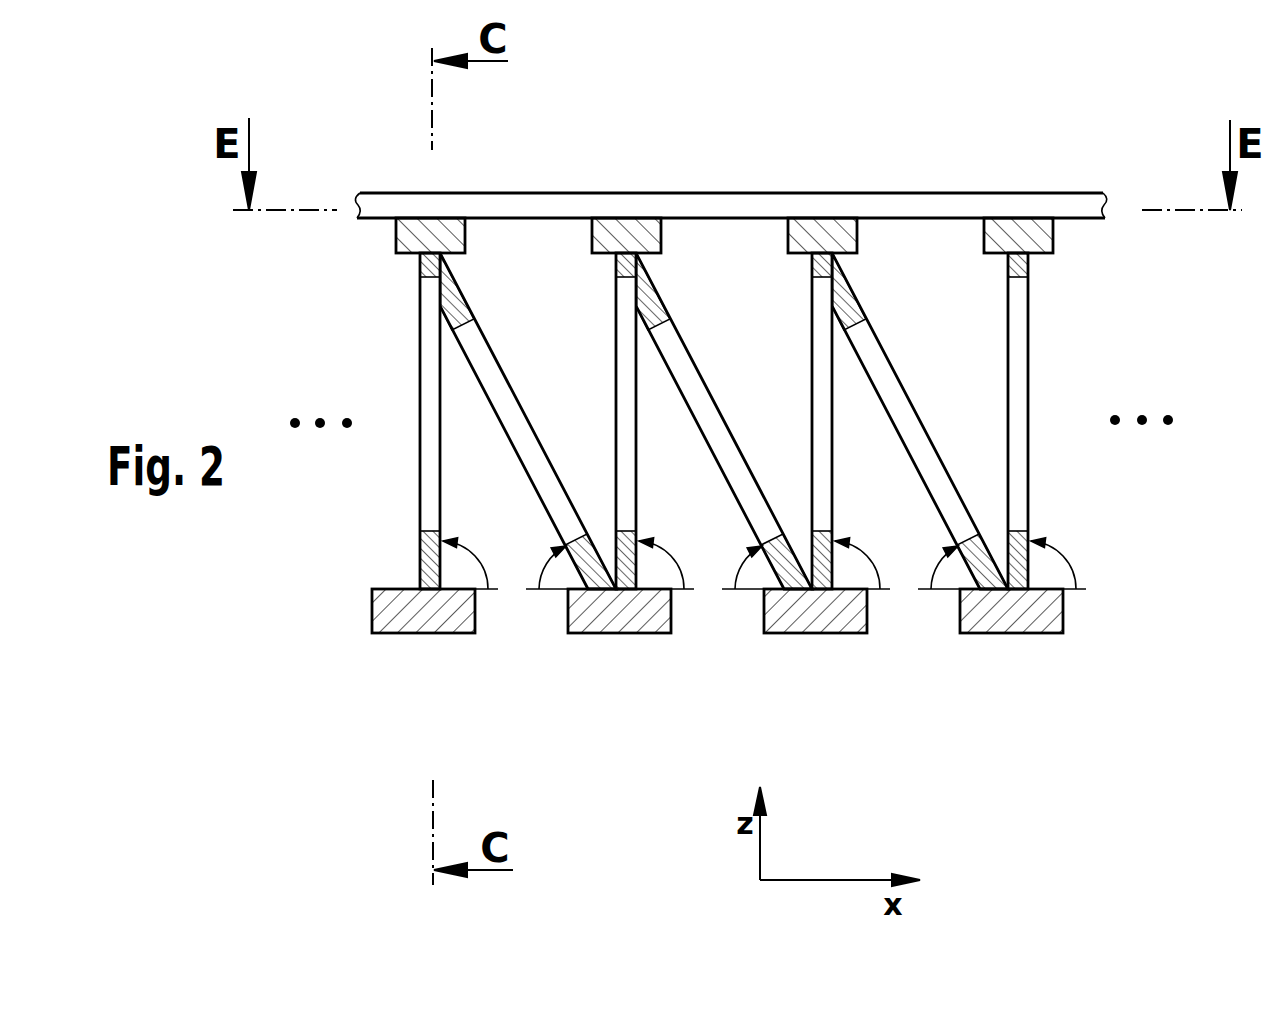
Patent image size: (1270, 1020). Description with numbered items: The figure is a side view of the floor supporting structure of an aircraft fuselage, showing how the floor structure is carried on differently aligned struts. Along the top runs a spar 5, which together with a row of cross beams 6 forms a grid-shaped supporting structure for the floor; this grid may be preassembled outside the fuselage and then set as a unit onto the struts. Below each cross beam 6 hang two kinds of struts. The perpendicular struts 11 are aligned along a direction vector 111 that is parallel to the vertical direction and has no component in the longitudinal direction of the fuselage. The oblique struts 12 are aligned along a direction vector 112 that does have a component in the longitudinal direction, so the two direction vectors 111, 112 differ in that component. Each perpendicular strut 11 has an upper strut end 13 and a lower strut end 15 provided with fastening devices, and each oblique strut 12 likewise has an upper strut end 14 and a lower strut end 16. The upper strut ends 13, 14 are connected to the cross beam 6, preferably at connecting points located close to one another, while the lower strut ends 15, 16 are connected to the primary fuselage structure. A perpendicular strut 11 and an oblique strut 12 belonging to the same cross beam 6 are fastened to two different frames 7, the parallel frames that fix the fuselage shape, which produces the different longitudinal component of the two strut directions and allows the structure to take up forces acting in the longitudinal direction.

The spar 5 is at (943, 205).
The cross beam 6 is at (421, 238).
The frame 7 is at (395, 618).
The perpendicular strut 11 is at (433, 365).
The oblique strut 12 is at (510, 408).
The upper strut end 13 is at (423, 268).
The upper strut end 14 is at (454, 300).
The lower strut end 15 is at (432, 552).
The lower strut end 16 is at (598, 576).
The direction vector 111 is at (488, 589).
The direction vector 112 is at (539, 589).